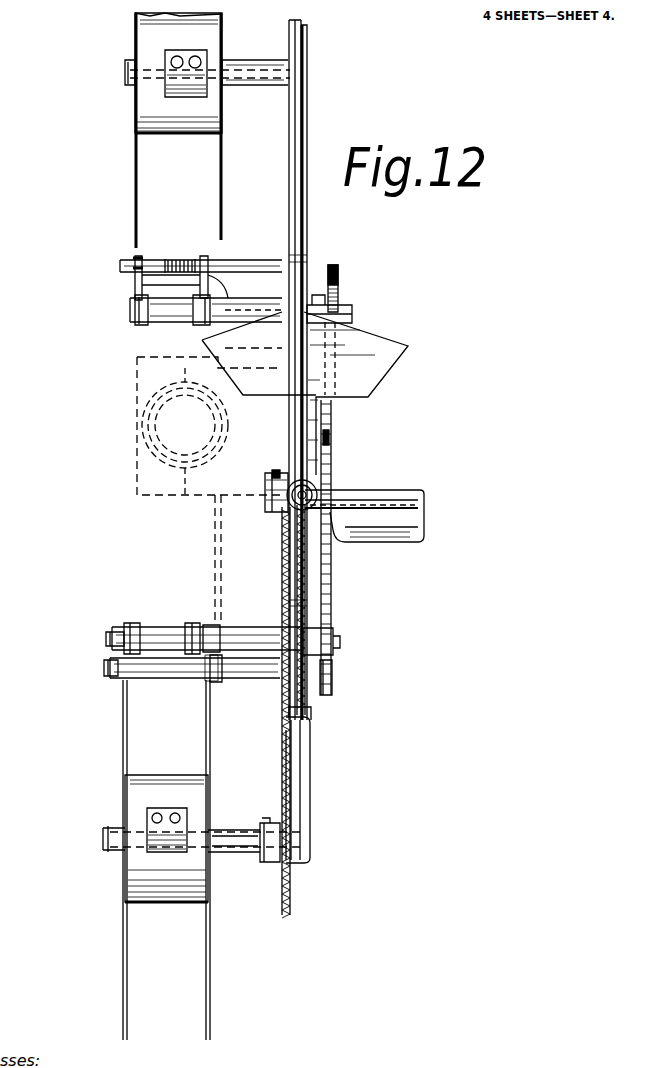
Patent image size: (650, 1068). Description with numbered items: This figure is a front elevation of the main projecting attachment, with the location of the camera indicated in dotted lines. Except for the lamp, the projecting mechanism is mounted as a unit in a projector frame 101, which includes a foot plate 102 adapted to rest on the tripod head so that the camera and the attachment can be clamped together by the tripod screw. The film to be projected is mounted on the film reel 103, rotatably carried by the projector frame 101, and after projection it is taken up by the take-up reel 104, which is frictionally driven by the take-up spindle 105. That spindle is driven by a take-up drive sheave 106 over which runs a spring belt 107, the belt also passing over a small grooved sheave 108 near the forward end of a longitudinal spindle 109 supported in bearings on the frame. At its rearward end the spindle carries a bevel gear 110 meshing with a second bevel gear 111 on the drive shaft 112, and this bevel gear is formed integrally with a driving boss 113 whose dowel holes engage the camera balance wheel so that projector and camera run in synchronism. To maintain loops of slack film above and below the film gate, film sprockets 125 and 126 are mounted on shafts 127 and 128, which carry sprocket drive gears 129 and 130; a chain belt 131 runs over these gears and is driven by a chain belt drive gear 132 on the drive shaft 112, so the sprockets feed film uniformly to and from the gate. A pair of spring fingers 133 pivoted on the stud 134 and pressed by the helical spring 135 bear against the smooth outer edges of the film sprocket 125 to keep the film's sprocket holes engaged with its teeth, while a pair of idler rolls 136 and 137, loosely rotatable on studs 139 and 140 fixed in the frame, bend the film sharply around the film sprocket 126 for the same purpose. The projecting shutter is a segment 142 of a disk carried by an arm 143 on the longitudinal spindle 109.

The projector frame 101 is at (307, 237).
The foot plate 102 is at (216, 682).
The film reel 103 is at (145, 108).
The take-up reel 104 is at (127, 740).
The take-up spindle 105 is at (232, 860).
The take-up drive sheave 106 is at (283, 912).
The spring belt 107 is at (282, 745).
The small grooved sheave 108 is at (318, 490).
The longitudinal spindle 109 is at (292, 506).
The bevel gear 110 is at (312, 485).
The second bevel gear 111 is at (276, 470).
The drive shaft 112 is at (400, 490).
The driving boss 113 is at (265, 502).
The film sprocket 125 is at (165, 320).
The film sprocket 126 is at (158, 628).
The shaft 127 is at (352, 311).
The shaft 128 is at (340, 640).
The sprocket drive gear 129 is at (338, 283).
The sprocket drive gear 130 is at (332, 682).
The chain belt 131 is at (334, 422).
The chain belt drive gear 132 is at (335, 512).
The spring fingers 133 is at (134, 279).
The stud 134 is at (150, 258).
The helical spring 135 is at (178, 262).
The idler roll 136 is at (130, 625).
The idler roll 137 is at (160, 680).
The stud 139 is at (104, 638).
The stud 140 is at (104, 667).
The segment 142 is at (365, 340).
The arm 143 is at (333, 437).